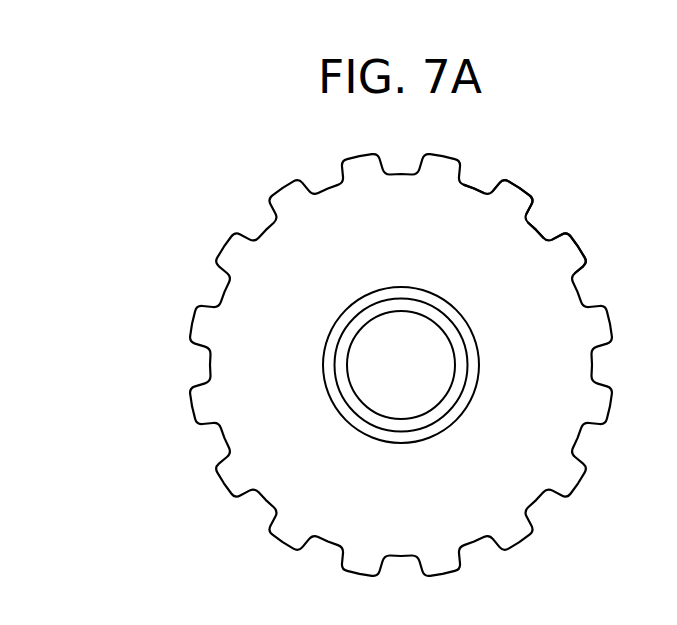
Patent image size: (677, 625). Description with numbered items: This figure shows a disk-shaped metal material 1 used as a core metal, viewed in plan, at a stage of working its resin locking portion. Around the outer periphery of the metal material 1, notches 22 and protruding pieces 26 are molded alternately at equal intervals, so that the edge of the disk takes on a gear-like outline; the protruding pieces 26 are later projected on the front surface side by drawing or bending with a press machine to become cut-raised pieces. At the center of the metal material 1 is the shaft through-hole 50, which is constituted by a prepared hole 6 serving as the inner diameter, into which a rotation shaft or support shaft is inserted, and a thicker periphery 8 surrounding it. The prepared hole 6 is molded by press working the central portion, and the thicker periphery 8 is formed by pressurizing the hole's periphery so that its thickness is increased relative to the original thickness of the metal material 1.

The metal material 1 is at (557, 298).
The notches 22 is at (480, 170).
The protruding pieces 26 is at (513, 192).
The shaft through-hole 50 is at (142, 262).
The prepared hole 6 is at (387, 342).
The thicker periphery 8 is at (340, 365).